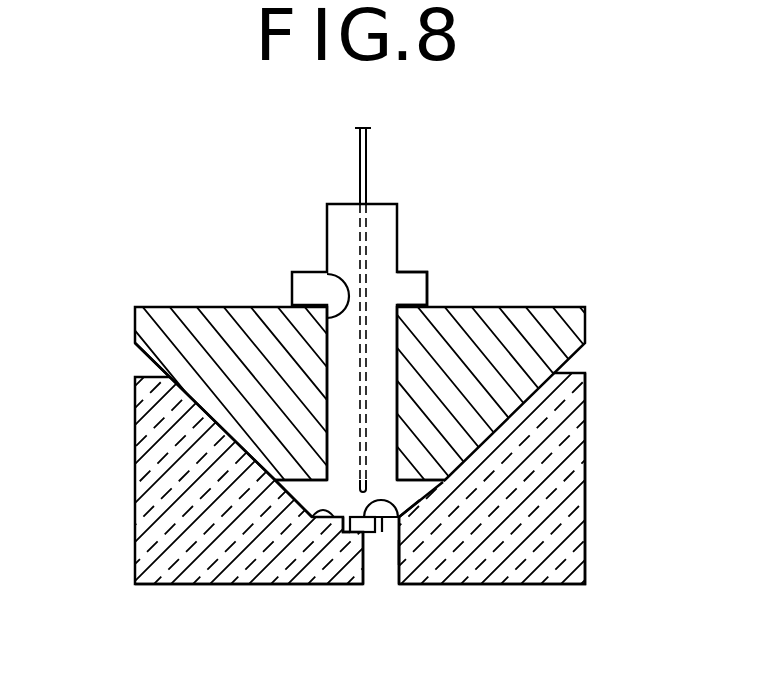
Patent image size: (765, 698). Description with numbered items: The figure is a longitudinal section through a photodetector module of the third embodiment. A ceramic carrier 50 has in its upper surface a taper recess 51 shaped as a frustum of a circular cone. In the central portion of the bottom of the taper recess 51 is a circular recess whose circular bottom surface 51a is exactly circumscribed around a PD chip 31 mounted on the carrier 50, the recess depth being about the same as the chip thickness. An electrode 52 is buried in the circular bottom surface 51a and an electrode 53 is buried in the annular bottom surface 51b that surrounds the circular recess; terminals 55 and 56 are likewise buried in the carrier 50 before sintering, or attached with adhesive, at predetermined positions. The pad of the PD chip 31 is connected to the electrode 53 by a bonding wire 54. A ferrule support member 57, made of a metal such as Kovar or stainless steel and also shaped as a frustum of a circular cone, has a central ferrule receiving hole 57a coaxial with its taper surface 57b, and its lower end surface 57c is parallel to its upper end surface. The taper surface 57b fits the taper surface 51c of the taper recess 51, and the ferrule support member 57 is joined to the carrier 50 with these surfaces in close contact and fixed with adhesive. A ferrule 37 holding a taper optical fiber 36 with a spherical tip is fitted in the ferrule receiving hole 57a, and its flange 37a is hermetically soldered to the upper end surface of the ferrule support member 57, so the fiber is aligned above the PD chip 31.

The PD chip 31 is at (378, 535).
The taper optical fiber 36 is at (366, 152).
The ferrule 37 is at (333, 217).
The flange 37a is at (415, 276).
The ceramic carrier 50 is at (585, 572).
The taper recess 51 is at (313, 492).
The circular bottom surface 51a is at (340, 543).
The annular bottom surface 51b is at (240, 580).
The taper surface 51c is at (280, 487).
The electrode 52 is at (356, 535).
The electrode 53 is at (405, 522).
The bonding wire 54 is at (390, 500).
The terminal 55 is at (369, 535).
The terminal 56 is at (399, 552).
The ferrule support member 57 is at (552, 318).
The ferrule receiving hole 57a is at (325, 268).
The taper surface 57b is at (138, 357).
The lower end surface 57c is at (437, 484).